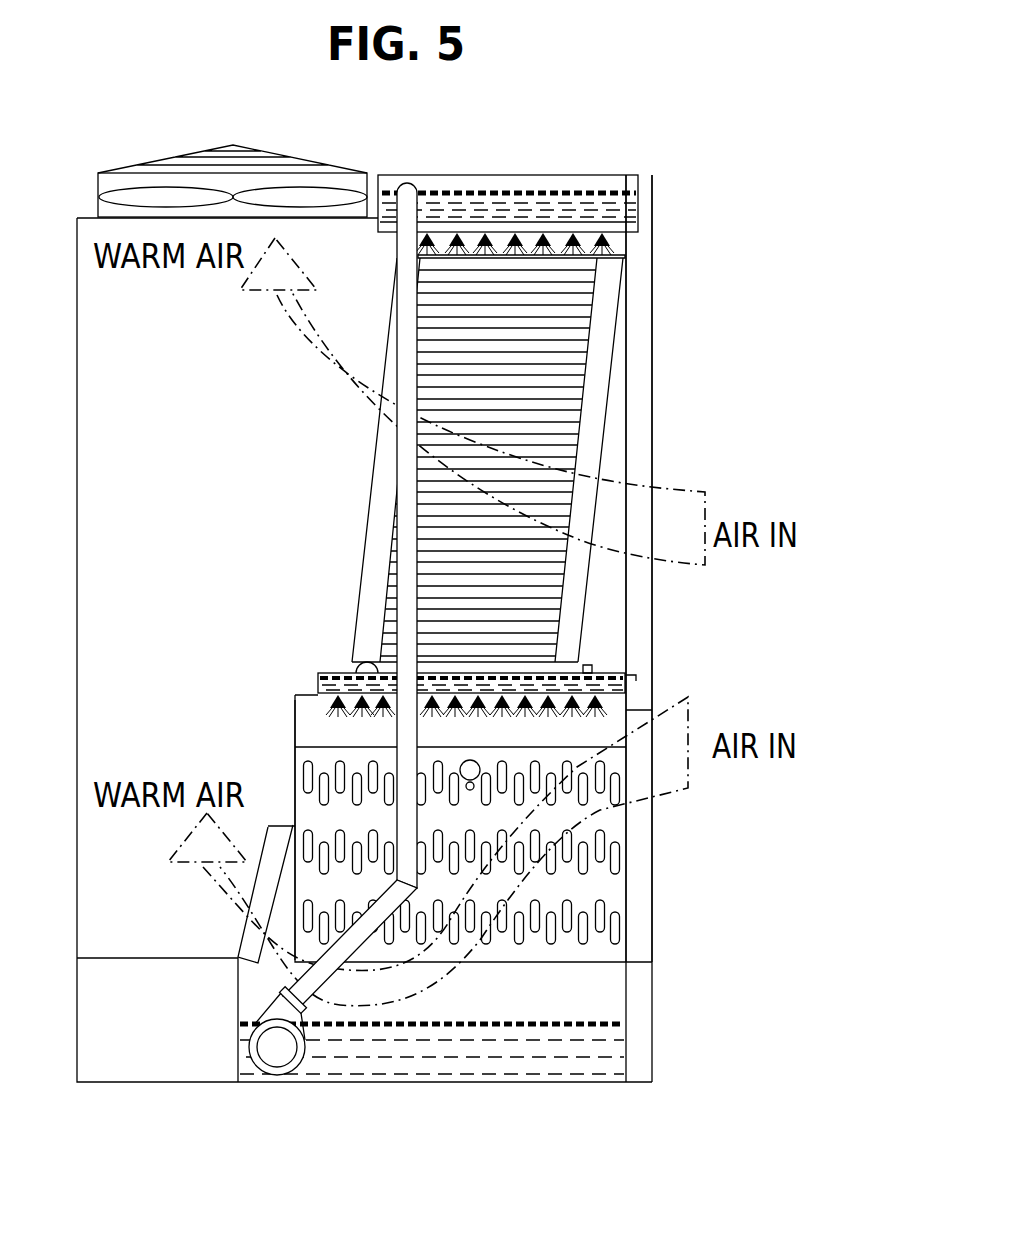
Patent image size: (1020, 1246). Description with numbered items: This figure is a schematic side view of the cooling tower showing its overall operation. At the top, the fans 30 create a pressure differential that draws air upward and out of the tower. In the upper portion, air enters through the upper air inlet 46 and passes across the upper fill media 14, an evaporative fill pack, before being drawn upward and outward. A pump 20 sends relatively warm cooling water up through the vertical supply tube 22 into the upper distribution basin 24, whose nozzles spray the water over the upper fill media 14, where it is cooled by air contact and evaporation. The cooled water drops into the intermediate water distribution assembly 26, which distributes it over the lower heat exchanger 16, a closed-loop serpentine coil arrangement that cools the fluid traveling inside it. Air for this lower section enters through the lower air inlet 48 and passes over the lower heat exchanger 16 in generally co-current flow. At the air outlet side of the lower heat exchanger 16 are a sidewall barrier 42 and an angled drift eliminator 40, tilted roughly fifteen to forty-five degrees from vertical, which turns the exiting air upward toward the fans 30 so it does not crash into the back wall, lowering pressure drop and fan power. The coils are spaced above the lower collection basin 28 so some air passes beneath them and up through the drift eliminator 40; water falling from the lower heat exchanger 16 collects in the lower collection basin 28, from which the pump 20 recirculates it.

The upper fill media 14 is at (572, 352).
The lower serpentine conduit heat exchanger arrangement 16 is at (607, 882).
The pump 20 is at (255, 1076).
The vertical supply tube 22 is at (410, 210).
The upper distribution basin 24 is at (607, 213).
The intermediate water distribution assembly 26 is at (596, 678).
The lower collection basin 28 is at (615, 1052).
The fans 30 is at (336, 175).
The drift eliminator 40 is at (240, 948).
The sidewall barrier 42 is at (292, 800).
The upper air inlet 46 is at (640, 463).
The lower air inlet 48 is at (640, 837).